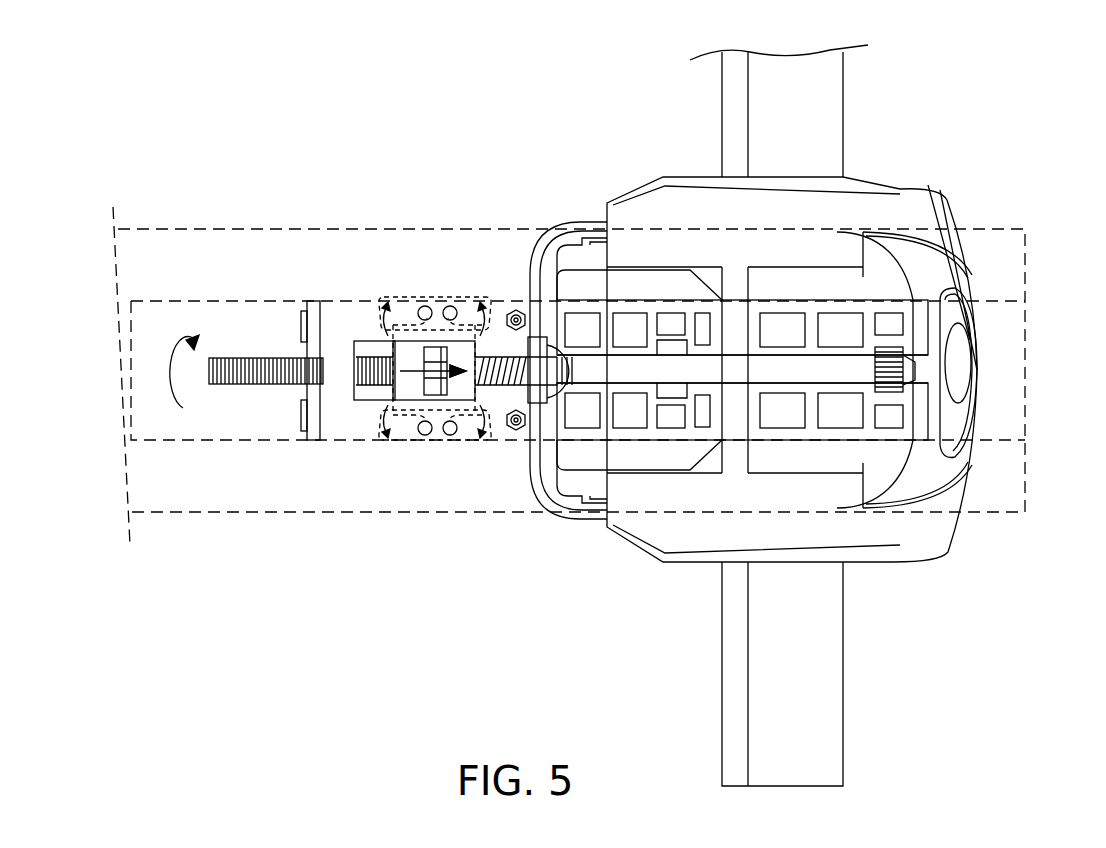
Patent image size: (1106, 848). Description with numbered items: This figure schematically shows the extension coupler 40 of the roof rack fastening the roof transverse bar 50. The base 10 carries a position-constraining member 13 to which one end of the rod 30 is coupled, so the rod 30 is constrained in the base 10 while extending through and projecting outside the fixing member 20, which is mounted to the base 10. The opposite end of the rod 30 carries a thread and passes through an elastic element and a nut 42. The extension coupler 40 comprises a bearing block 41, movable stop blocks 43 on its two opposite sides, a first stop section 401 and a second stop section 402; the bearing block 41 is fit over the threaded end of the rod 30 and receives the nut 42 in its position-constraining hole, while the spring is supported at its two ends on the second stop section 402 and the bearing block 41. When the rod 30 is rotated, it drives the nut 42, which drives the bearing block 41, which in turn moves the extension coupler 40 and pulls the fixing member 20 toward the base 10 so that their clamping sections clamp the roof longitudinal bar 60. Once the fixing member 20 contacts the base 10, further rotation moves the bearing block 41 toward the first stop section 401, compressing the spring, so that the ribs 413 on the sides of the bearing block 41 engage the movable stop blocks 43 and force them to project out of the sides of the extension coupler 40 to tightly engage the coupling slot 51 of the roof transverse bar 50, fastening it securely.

The base 10 is at (923, 260).
The position-constraining member 13 is at (913, 392).
The fixing member 20 is at (552, 240).
The rod 30 is at (838, 372).
The extension coupler 40 is at (553, 640).
The bearing block 41 is at (458, 392).
The rib 413 is at (400, 428).
The nut 42 is at (432, 378).
The movable stop block 43 is at (490, 402).
The first stop section 401 is at (498, 436).
The second stop section 402 is at (516, 430).
The roof transverse bar 50 is at (225, 257).
The coupling slot 51 is at (190, 300).
The roof longitudinal bar 60 is at (803, 690).